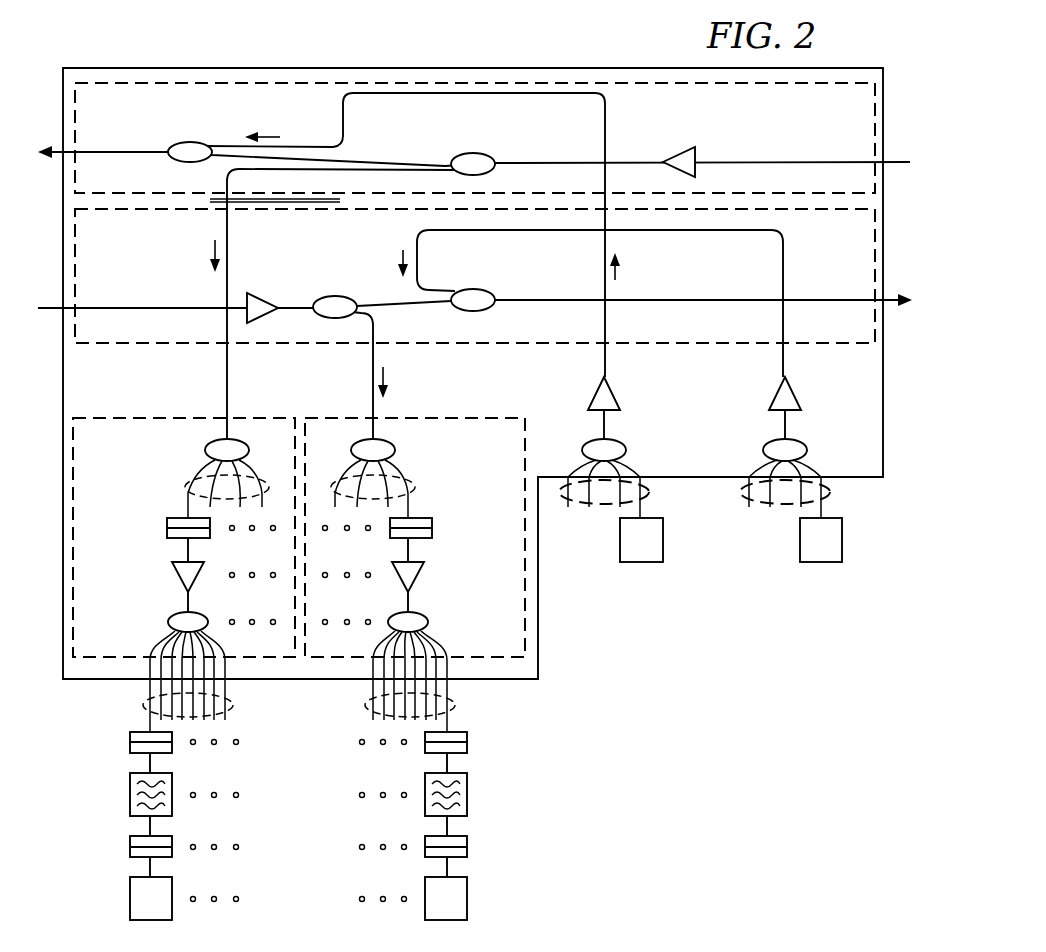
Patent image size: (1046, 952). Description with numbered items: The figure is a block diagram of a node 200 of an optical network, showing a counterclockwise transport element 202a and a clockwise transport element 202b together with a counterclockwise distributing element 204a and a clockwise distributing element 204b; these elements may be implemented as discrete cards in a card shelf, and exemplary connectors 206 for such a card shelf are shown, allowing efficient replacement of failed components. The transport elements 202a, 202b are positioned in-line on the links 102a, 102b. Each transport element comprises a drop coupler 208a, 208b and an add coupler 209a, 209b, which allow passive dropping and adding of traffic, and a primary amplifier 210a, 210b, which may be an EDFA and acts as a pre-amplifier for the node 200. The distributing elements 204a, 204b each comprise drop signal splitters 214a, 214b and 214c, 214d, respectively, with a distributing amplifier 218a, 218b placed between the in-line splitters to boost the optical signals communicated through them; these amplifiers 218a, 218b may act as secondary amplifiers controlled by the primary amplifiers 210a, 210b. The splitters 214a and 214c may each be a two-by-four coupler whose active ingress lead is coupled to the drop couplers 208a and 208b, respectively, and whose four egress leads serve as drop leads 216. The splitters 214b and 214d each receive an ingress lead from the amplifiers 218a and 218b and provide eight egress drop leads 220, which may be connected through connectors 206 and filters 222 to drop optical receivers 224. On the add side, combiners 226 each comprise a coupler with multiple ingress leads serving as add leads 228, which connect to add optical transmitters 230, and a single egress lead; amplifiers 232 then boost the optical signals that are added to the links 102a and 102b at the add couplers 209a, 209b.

The node 200 is at (238, 62).
The counterclockwise transport element 202a is at (140, 123).
The clockwise transport element 202b is at (140, 249).
The link 102a is at (813, 159).
The link 102b is at (813, 299).
The counterclockwise distributing element 204a is at (134, 410).
The clockwise distributing element 204b is at (344, 410).
The connector 206 is at (167, 532).
The drop coupler 208a is at (478, 153).
The drop coupler 208b is at (337, 296).
The add coupler 209a is at (195, 142).
The add coupler 209b is at (478, 289).
The primary amplifier 210a is at (676, 150).
The primary amplifier 210b is at (265, 293).
The drop signal splitter 214a is at (205, 451).
The drop signal splitter 214b is at (168, 622).
The drop signal splitter 214c is at (395, 451).
The drop signal splitter 214d is at (428, 623).
The drop leads 216 is at (185, 489).
The distributing amplifier 218a is at (177, 577).
The distributing amplifier 218b is at (420, 577).
The drop leads 220 is at (145, 704).
The filter 222 is at (130, 794).
The drop optical receiver 224 is at (130, 898).
The combiner 226 is at (626, 451).
The add leads 228 is at (649, 492).
The add optical transmitter 230 is at (663, 538).
The amplifier 232 is at (614, 392).